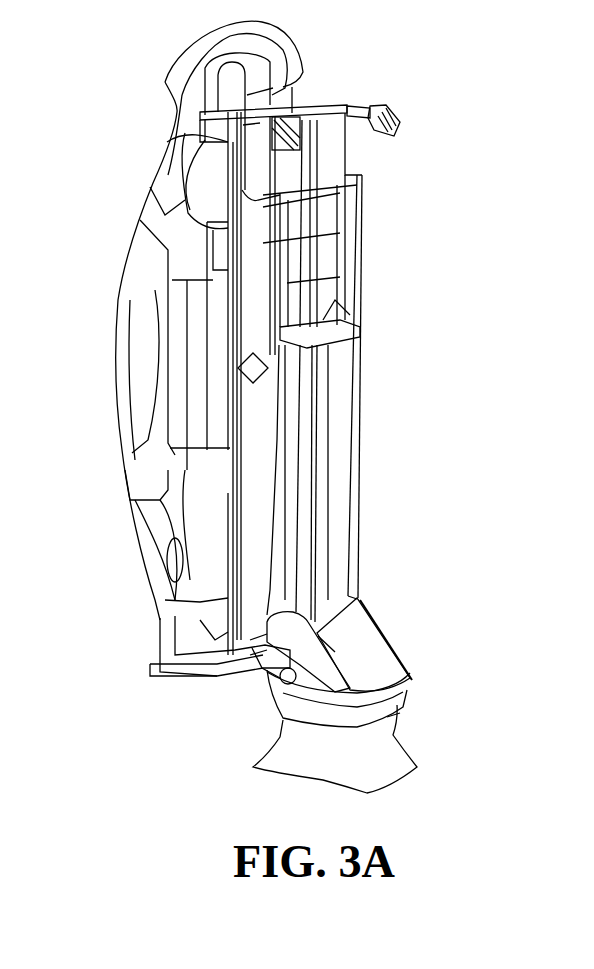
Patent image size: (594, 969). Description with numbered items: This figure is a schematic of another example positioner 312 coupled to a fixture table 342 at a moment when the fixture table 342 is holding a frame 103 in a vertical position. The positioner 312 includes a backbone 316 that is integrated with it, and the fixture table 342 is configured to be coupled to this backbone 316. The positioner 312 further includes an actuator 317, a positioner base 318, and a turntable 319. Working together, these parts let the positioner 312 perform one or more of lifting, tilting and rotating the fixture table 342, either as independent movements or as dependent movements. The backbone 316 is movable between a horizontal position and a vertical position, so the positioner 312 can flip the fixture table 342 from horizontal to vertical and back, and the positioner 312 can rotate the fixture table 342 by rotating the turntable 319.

The frame 103 is at (165, 205).
The positioner 312 is at (378, 578).
The backbone 316 is at (345, 451).
The actuator 317 is at (330, 625).
The positioner base 318 is at (382, 655).
The turntable 319 is at (278, 742).
The fixture table 342 is at (352, 289).